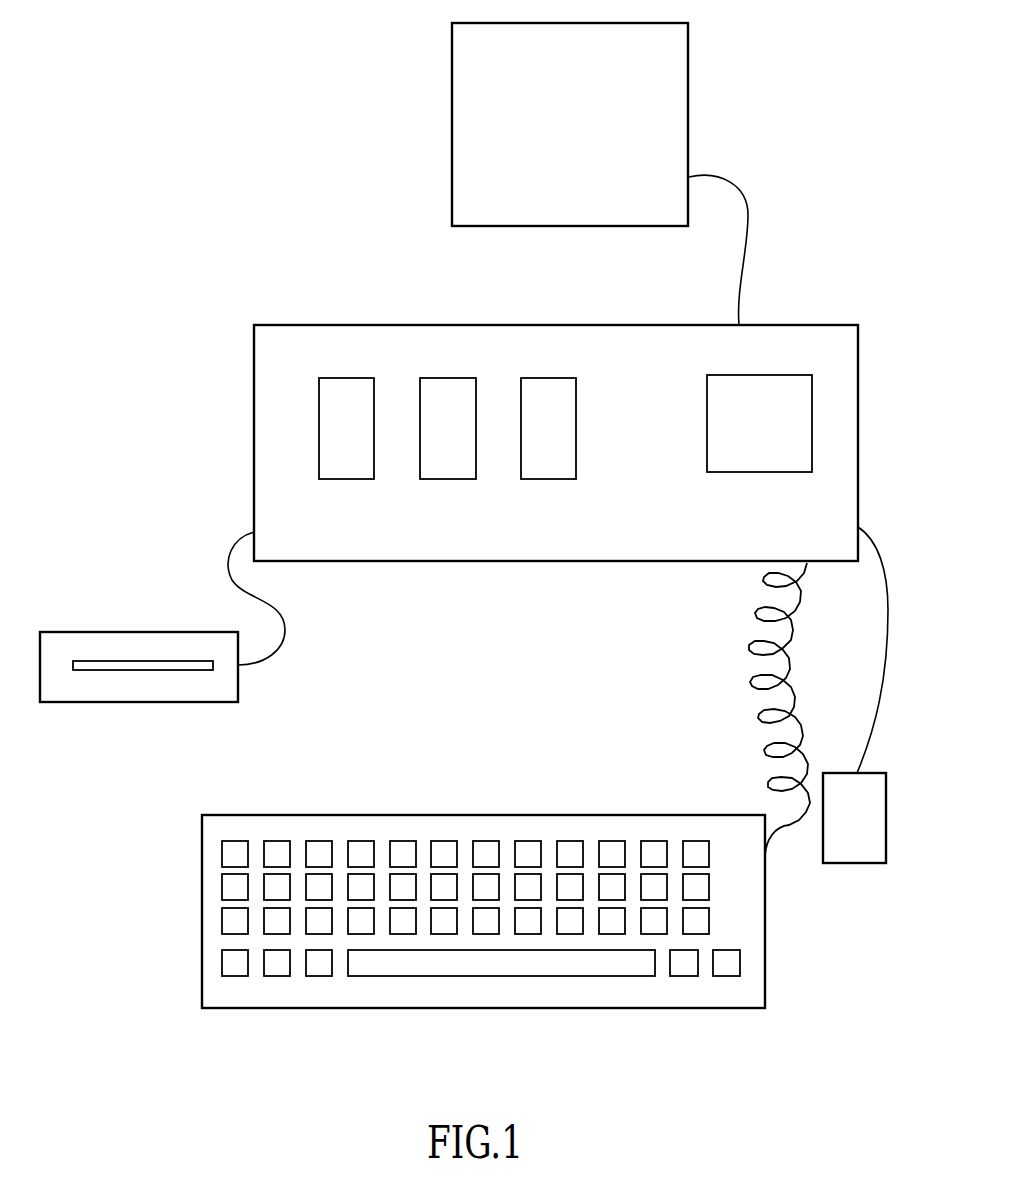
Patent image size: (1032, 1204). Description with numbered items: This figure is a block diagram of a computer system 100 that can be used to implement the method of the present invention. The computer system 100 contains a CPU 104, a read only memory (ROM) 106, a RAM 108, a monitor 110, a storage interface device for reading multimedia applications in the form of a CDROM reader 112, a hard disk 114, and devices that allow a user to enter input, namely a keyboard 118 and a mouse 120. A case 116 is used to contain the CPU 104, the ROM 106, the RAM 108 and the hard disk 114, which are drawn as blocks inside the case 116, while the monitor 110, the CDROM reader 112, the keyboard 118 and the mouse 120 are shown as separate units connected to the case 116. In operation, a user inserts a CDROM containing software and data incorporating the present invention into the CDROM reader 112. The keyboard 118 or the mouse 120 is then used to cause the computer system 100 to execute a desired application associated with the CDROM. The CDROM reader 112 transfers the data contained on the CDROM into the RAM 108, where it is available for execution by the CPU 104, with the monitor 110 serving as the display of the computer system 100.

The computer system 100 is at (178, 1043).
The CPU 104 is at (355, 378).
The read only memory (ROM) 106 is at (460, 378).
The RAM 108 is at (563, 378).
The monitor 110 is at (452, 73).
The CDROM reader 112 is at (175, 632).
The hard disk 114 is at (757, 375).
The case 116 is at (447, 563).
The keyboard 118 is at (202, 915).
The mouse 120 is at (853, 863).